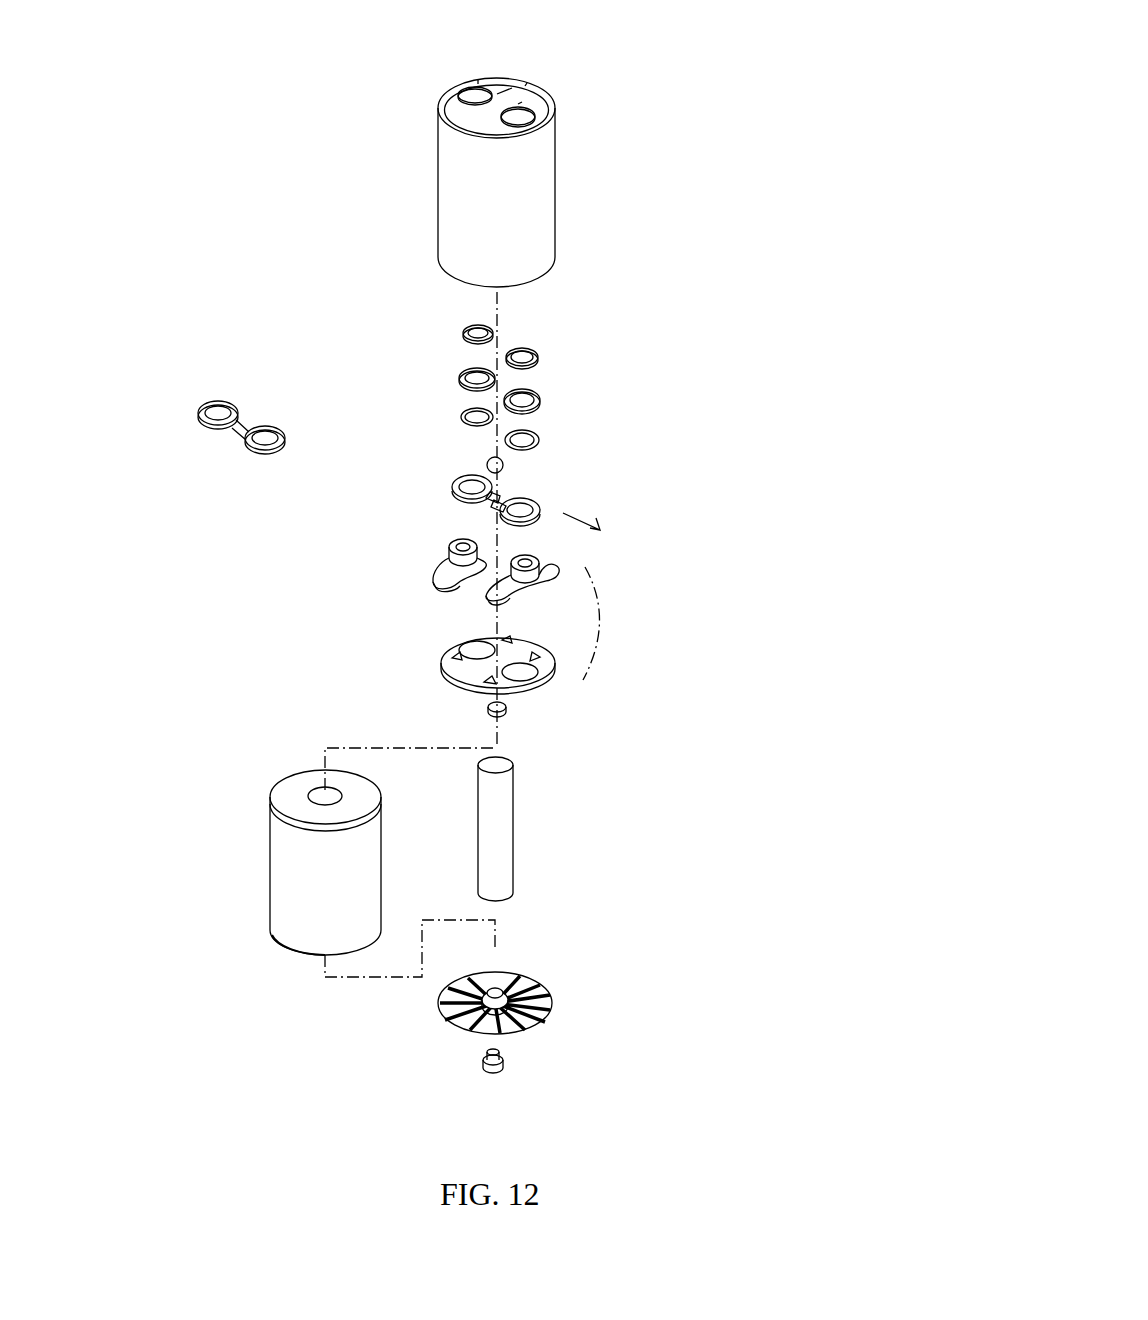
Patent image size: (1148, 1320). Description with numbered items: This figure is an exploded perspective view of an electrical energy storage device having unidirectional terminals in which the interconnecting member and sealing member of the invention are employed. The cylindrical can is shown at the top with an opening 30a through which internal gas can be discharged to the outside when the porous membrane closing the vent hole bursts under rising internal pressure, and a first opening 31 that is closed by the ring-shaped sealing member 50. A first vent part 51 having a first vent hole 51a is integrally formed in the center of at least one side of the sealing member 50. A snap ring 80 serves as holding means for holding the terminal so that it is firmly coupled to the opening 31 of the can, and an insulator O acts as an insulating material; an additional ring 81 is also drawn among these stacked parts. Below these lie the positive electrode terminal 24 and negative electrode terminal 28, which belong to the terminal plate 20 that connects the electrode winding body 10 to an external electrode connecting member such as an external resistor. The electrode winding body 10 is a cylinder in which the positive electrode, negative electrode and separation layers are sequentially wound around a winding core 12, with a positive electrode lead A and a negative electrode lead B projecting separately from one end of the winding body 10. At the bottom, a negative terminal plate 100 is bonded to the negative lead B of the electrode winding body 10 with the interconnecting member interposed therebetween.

The opening 30a is at (498, 149).
The first opening 31 is at (458, 94).
The snap ring 80 is at (495, 333).
The rings 81 is at (542, 402).
The insulator O is at (540, 440).
The first vent part 51 is at (458, 492).
The first vent hole 51a is at (503, 487).
The sealing member 50 is at (600, 530).
The negative electrode terminal 28 is at (440, 548).
The positive electrode terminal 24 is at (560, 552).
The terminal plate 20 is at (603, 622).
The electrode winding body 10 is at (261, 869).
The positive electrode lead A is at (282, 785).
The negative electrode lead B is at (295, 947).
The winding core 12 is at (503, 822).
The negative terminal plate 100 is at (540, 1003).